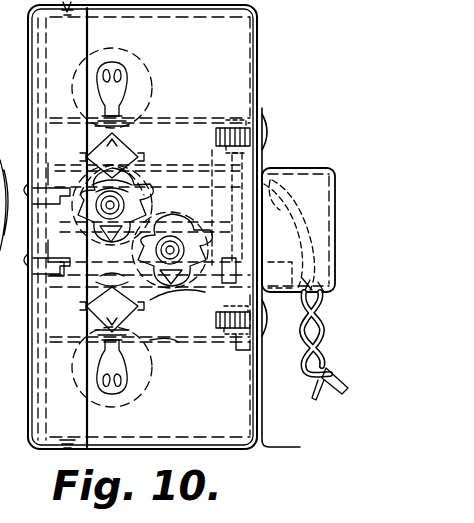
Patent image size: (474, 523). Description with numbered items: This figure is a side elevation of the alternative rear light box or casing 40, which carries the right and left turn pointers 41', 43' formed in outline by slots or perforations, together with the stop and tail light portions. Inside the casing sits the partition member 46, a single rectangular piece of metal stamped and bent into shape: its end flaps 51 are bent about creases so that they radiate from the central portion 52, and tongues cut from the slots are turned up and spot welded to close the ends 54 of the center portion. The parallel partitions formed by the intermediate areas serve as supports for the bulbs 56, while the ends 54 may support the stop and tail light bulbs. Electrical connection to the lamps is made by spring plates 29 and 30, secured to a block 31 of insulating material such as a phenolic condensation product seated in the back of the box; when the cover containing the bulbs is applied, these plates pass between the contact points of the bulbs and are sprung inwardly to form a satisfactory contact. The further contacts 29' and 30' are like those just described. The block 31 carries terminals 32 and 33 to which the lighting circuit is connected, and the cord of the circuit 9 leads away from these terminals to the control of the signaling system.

The rear light box or casing 40 is at (264, 446).
The turn pointer 43' is at (132, 77).
The partition member 46 is at (190, 115).
The bulbs 56 is at (172, 182).
The contact 30' is at (195, 223).
The ends of the center portion 54 is at (206, 290).
The turn pointer 41' is at (138, 367).
The end flaps 51 is at (158, 350).
The contact 29' is at (262, 128).
The spring plate 29 is at (284, 225).
The block 31 is at (250, 352).
The spring plate 30 is at (256, 226).
The terminal 33 is at (266, 200).
The terminal 32 is at (290, 246).
The circuit 9 is at (332, 343).
The central portion 52 is at (52, 276).